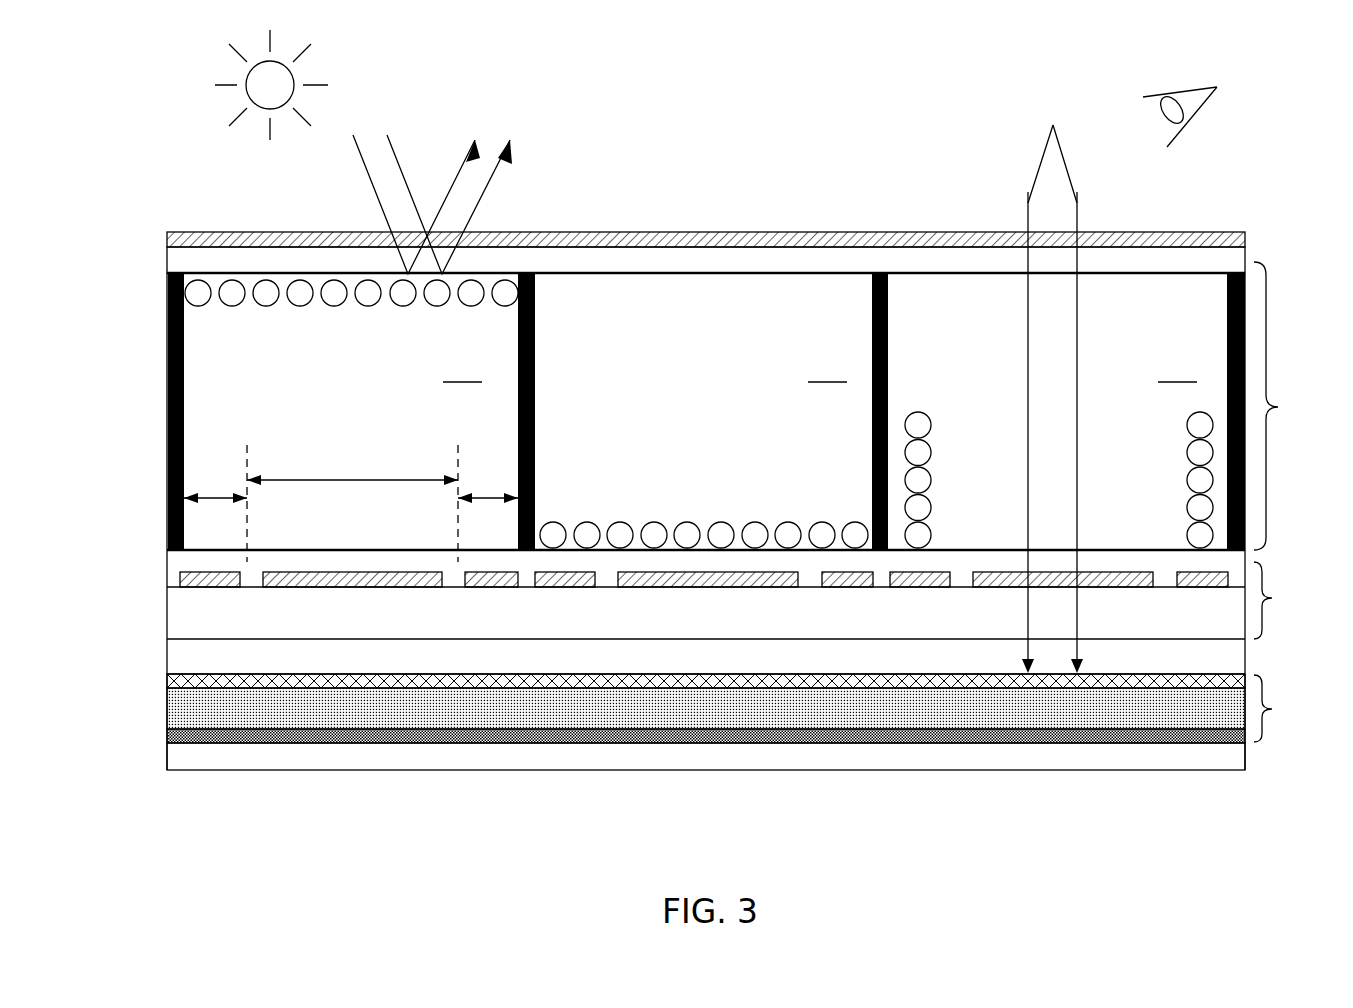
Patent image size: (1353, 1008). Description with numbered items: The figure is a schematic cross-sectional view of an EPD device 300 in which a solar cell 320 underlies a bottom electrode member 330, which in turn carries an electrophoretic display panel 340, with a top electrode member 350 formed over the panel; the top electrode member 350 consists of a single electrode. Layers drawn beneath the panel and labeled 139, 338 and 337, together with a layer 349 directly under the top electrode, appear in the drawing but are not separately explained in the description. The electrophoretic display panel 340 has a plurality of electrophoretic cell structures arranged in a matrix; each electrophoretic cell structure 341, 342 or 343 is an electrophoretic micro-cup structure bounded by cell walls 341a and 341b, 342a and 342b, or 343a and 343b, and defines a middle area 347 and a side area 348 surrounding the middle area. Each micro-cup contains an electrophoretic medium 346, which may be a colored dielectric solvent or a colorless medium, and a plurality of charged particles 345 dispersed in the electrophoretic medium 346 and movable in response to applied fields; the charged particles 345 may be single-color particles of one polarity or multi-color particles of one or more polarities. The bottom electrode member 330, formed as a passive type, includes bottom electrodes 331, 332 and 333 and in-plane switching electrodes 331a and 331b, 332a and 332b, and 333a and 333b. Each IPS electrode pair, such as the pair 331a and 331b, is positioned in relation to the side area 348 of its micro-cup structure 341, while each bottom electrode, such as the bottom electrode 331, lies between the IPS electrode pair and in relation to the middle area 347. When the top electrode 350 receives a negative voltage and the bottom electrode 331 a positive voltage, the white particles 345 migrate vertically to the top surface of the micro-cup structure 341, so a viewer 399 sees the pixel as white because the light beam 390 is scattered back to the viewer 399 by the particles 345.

The EPD device 300 is at (730, 38).
The light beam 390 is at (713, 386).
The viewer 399 is at (1205, 103).
The cell wall 341a is at (192, 272).
The electrophoretic cell structure 341 is at (351, 365).
The cell wall 341b is at (556, 337).
The cell wall 342a is at (533, 274).
The electrophoretic cell structure 342 is at (758, 297).
The cell wall 342b is at (907, 337).
The cell wall 343a is at (892, 287).
The electrophoretic cell structure 343 is at (980, 397).
The cell wall 343b is at (1222, 287).
The top electrode member 350 is at (1245, 240).
The transparent electrode layer 349 is at (202, 257).
The charged particles 345 is at (334, 300).
The electrophoretic medium 346 is at (827, 371).
The middle area 347 is at (352, 503).
The side area 348 is at (351, 484).
The electrophoretic display panel 340 is at (1292, 406).
The electrode layer 139 is at (205, 563).
The dielectric layer 338 is at (207, 622).
The substrate layer 337 is at (207, 660).
The bottom electrode member 330 is at (1288, 600).
The solar cell 320 is at (744, 708).
The IPS electrode 331a is at (215, 573).
The bottom electrode 331 is at (353, 573).
The IPS electrode 331b is at (480, 573).
The IPS electrode 332a is at (563, 573).
The bottom electrode 332 is at (705, 573).
The IPS electrode 332b is at (843, 573).
The IPS electrode 333a is at (929, 573).
The bottom electrode 333 is at (1058, 573).
The IPS electrode 333b is at (1203, 573).